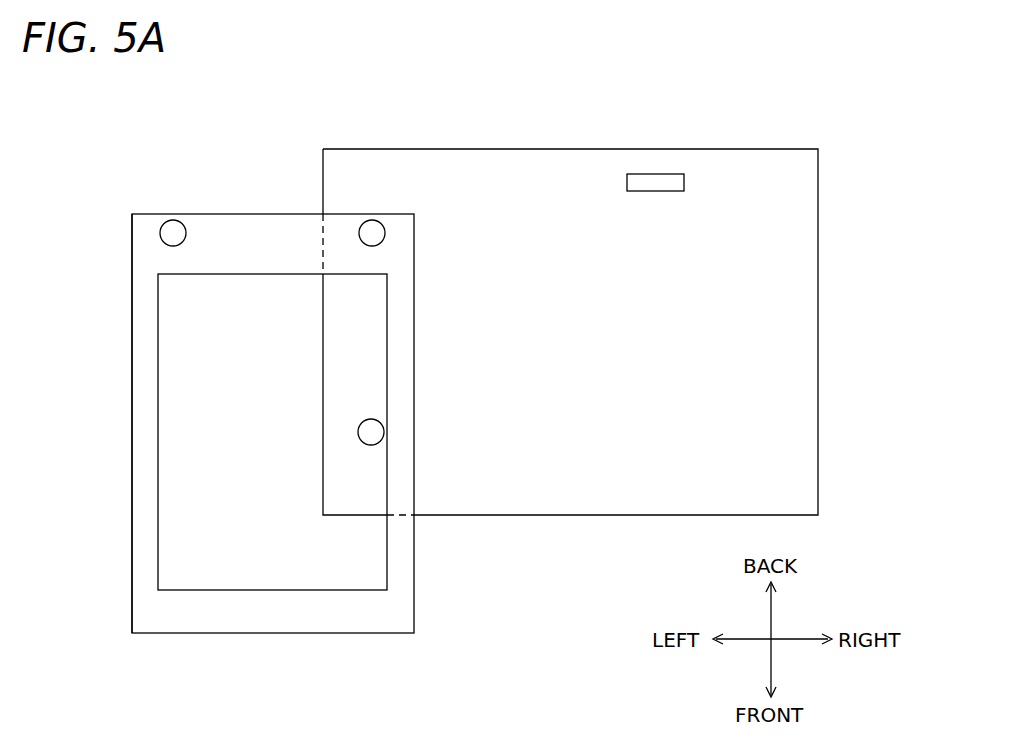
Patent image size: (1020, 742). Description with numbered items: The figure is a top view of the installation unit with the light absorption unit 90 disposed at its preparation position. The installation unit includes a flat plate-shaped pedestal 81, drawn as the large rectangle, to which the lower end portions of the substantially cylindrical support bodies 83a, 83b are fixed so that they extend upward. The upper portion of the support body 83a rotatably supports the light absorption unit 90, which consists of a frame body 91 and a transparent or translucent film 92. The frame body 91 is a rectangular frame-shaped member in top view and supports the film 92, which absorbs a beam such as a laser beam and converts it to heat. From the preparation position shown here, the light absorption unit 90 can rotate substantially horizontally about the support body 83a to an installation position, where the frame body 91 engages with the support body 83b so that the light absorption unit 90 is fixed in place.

The pedestal 81 is at (797, 255).
The support body 83a is at (371, 220).
The support body 83b is at (383, 438).
The light absorption unit 90 is at (266, 194).
The frame body 91 is at (131, 330).
The film 92 is at (267, 562).